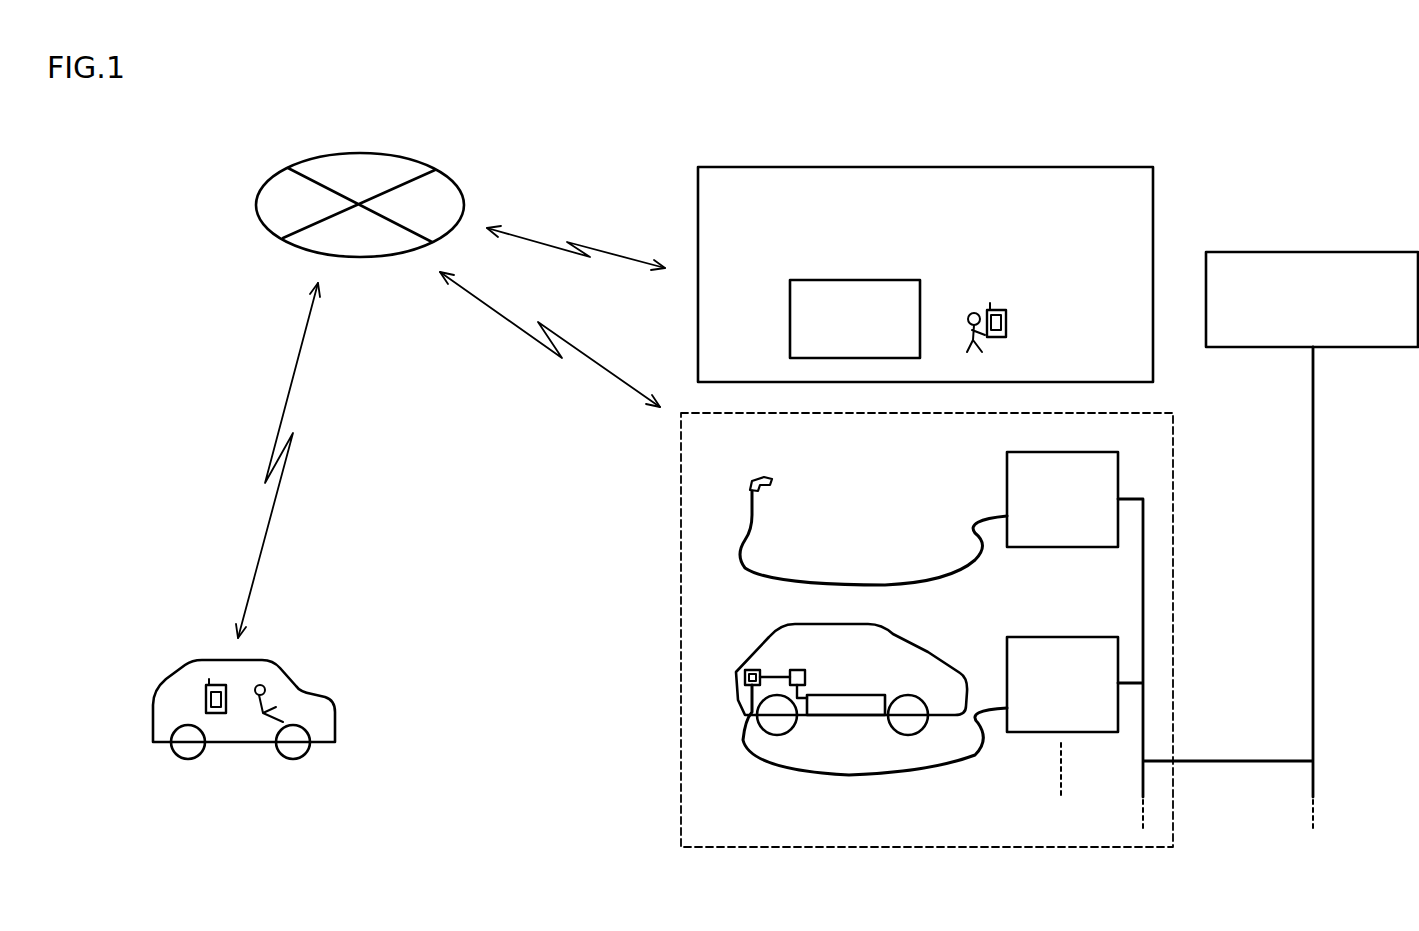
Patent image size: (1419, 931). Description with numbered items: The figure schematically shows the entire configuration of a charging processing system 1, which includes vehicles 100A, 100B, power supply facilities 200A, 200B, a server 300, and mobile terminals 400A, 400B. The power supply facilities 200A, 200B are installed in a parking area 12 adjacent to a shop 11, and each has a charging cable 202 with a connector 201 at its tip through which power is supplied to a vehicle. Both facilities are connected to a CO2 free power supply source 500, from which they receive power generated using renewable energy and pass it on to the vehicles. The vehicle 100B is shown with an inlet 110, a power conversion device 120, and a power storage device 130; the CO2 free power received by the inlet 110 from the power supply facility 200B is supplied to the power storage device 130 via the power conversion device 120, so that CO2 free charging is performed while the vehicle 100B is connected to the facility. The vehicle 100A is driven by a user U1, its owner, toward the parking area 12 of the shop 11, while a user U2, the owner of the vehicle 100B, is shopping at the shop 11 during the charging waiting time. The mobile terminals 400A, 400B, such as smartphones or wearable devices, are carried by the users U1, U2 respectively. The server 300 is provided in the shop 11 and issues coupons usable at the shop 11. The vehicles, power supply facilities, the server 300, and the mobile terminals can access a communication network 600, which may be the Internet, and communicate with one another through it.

The charging processing system 1 is at (860, 132).
The shop 11 is at (1107, 167).
The parking area 12 is at (1140, 412).
The vehicle 100A is at (188, 663).
The vehicle 100B is at (881, 626).
The inlet 110 is at (752, 668).
The power conversion device 120 is at (797, 670).
The power storage device 130 is at (845, 695).
The power supply facility 200A is at (1072, 452).
The power supply facility 200B is at (1072, 637).
The connector 201 is at (748, 482).
The charging cable 202 is at (853, 582).
The server 300 is at (883, 280).
The mobile terminal 400A is at (217, 683).
The mobile terminal 400B is at (1003, 310).
The CO2 free power supply source 500 is at (1378, 252).
The communication network 600 is at (387, 155).
The user U1 is at (265, 685).
The user U2 is at (970, 312).